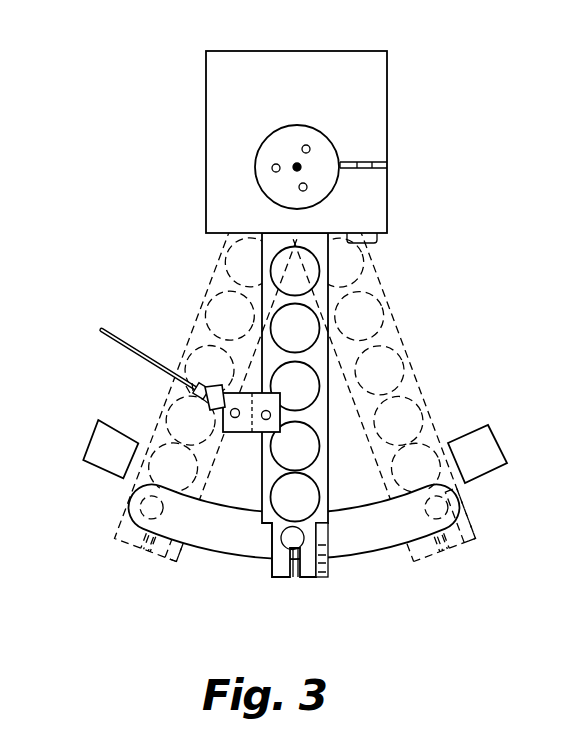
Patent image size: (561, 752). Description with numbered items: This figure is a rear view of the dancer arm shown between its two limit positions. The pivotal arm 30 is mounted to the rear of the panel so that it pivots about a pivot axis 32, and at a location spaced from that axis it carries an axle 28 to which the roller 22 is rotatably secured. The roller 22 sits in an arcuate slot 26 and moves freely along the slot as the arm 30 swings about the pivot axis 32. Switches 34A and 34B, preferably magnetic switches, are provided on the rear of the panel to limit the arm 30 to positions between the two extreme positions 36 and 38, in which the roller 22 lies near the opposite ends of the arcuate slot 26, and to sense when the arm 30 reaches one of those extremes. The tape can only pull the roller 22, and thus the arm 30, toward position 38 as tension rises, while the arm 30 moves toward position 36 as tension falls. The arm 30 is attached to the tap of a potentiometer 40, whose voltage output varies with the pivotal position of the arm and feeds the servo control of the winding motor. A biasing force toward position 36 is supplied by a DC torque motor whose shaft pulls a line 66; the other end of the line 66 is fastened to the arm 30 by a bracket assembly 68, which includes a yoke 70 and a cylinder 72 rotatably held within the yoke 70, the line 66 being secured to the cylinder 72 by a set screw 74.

The roller 22 is at (267, 542).
The arcuate slot 26 is at (356, 538).
The axle 28 is at (293, 537).
The pivotal arm 30 is at (334, 291).
The pivot axis 32 is at (296, 165).
The switch 34A is at (488, 470).
The switch 34B is at (105, 463).
The extreme position 36 is at (186, 323).
The extreme position 38 is at (416, 375).
The potentiometer 40 is at (377, 128).
The line 66 is at (127, 346).
The bracket assembly 68 is at (280, 401).
The yoke 70 is at (242, 434).
The cylinder 72 is at (219, 386).
The set screw 74 is at (201, 394).